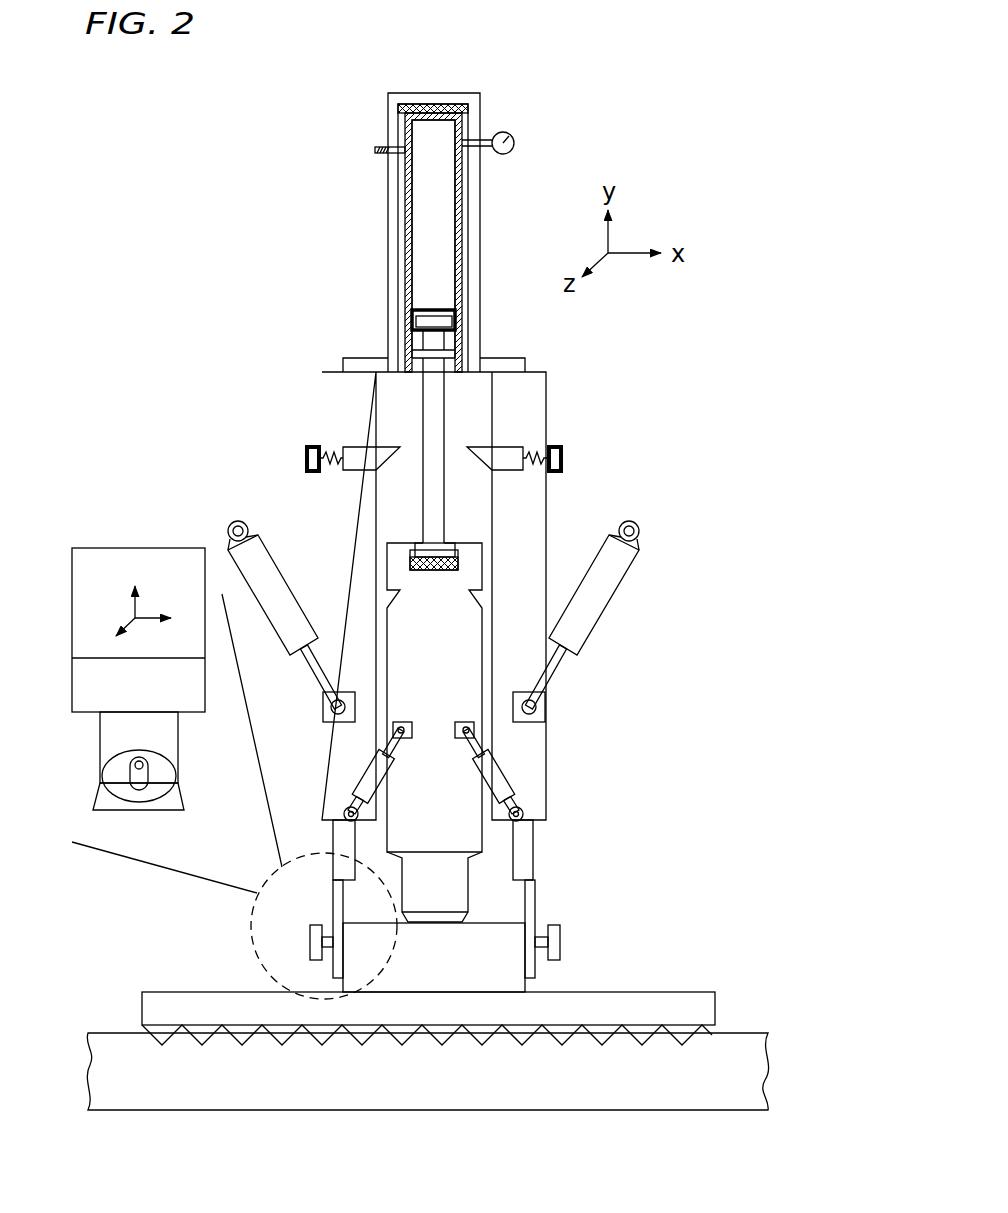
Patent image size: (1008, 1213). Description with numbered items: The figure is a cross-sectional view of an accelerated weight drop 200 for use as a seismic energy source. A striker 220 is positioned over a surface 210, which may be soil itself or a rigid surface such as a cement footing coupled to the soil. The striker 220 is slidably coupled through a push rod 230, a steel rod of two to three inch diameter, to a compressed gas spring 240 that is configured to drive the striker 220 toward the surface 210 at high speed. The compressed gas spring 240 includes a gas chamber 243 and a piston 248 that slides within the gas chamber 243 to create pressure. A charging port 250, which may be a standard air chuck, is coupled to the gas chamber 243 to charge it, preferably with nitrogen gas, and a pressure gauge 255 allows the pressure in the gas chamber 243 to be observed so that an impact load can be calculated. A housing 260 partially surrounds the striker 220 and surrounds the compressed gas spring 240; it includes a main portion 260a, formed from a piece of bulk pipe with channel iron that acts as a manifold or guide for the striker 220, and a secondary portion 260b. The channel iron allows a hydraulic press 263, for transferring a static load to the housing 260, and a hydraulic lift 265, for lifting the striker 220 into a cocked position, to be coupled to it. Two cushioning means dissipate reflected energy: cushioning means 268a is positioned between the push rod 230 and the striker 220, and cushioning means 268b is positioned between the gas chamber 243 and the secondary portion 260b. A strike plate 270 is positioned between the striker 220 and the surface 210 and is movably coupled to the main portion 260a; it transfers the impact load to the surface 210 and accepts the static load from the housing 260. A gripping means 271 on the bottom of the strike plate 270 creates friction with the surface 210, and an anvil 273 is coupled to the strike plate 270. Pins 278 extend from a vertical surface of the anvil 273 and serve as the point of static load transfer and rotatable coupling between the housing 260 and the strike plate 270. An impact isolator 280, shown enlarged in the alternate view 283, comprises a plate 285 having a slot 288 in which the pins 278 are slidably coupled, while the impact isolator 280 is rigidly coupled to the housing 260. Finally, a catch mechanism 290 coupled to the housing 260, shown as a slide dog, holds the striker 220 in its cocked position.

The accelerated weight drop 200 is at (210, 195).
The surface 210 is at (448, 1095).
The striker 220 is at (450, 830).
The push rod 230 is at (445, 515).
The compressed gas spring 240 is at (393, 190).
The gas chamber 243 is at (408, 260).
The piston 248 is at (422, 322).
The charging port 250 is at (375, 149).
The pressure gauge 255 is at (515, 143).
The housing 260 is at (690, 340).
The main portion 260a is at (562, 388).
The secondary portion 260b is at (480, 103).
The hydraulic press 263 is at (662, 537).
The hydraulic lift 265 is at (540, 782).
The cushioning means 268a is at (458, 564).
The cushioning means 268b is at (388, 106).
The strike plate 270 is at (715, 1005).
The gripping means 271 is at (578, 1043).
The anvil 273 is at (97, 805).
The pins 278 is at (563, 940).
The impact isolator 280 is at (67, 525).
The alternate view 283 is at (125, 472).
The plate 285 is at (100, 733).
The slot 288 is at (128, 771).
The catch mechanism 290 is at (577, 457).